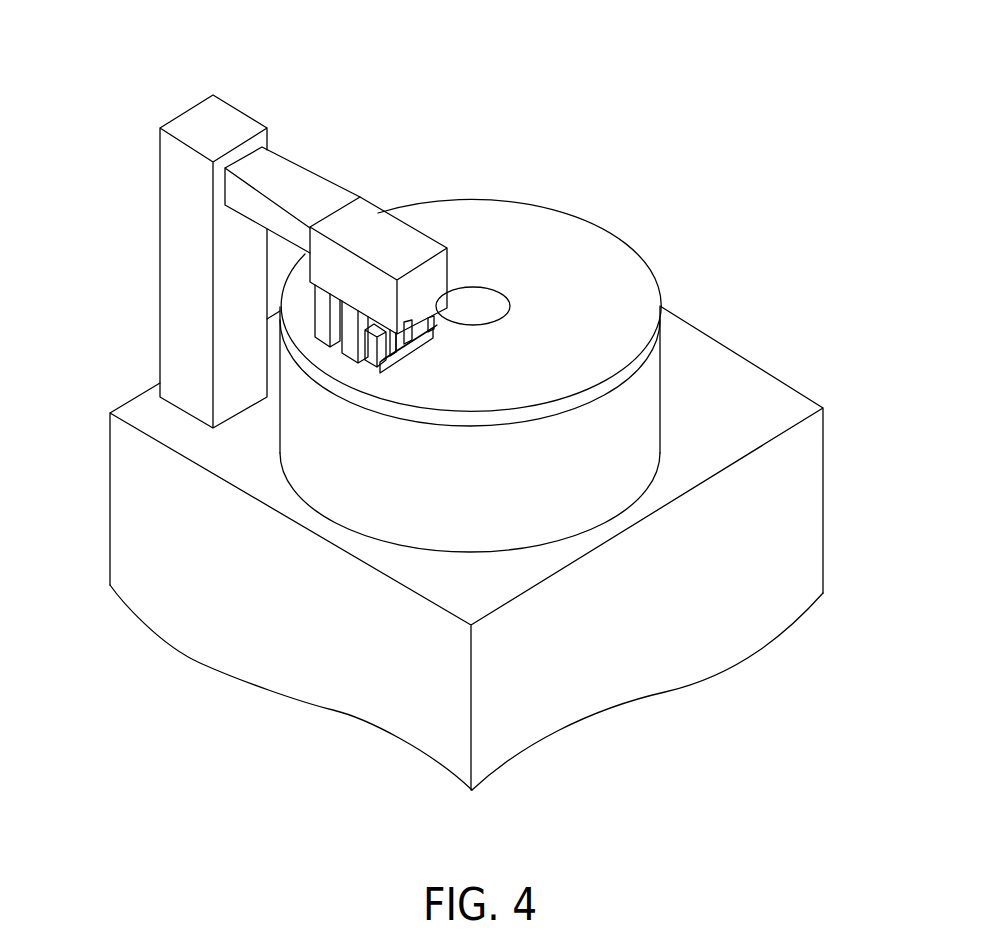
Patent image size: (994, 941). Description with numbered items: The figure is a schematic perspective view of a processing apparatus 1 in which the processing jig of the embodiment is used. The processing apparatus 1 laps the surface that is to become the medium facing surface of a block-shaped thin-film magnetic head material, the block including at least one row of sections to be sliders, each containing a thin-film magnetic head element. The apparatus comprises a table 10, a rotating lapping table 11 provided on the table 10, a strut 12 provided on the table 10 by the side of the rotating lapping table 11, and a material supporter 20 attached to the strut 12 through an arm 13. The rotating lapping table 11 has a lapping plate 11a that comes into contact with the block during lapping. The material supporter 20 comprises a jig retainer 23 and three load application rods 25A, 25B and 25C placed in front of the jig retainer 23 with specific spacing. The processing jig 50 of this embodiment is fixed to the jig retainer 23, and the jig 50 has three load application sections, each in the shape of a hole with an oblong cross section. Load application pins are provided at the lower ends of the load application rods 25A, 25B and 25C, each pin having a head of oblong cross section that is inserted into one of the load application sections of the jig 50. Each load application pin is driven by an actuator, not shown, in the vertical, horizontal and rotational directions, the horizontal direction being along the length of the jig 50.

The processing apparatus 1 is at (617, 94).
The table 10 is at (780, 400).
The rotating lapping table 11 is at (672, 252).
The lapping plate 11a is at (432, 213).
The strut 12 is at (160, 332).
The arm 13 is at (288, 172).
The material supporter 20 is at (370, 183).
The jig retainer 23 is at (372, 365).
The load application rod 25A is at (357, 352).
The load application rod 25B is at (440, 366).
The load application rod 25C is at (445, 352).
The processing jig 50 is at (400, 350).